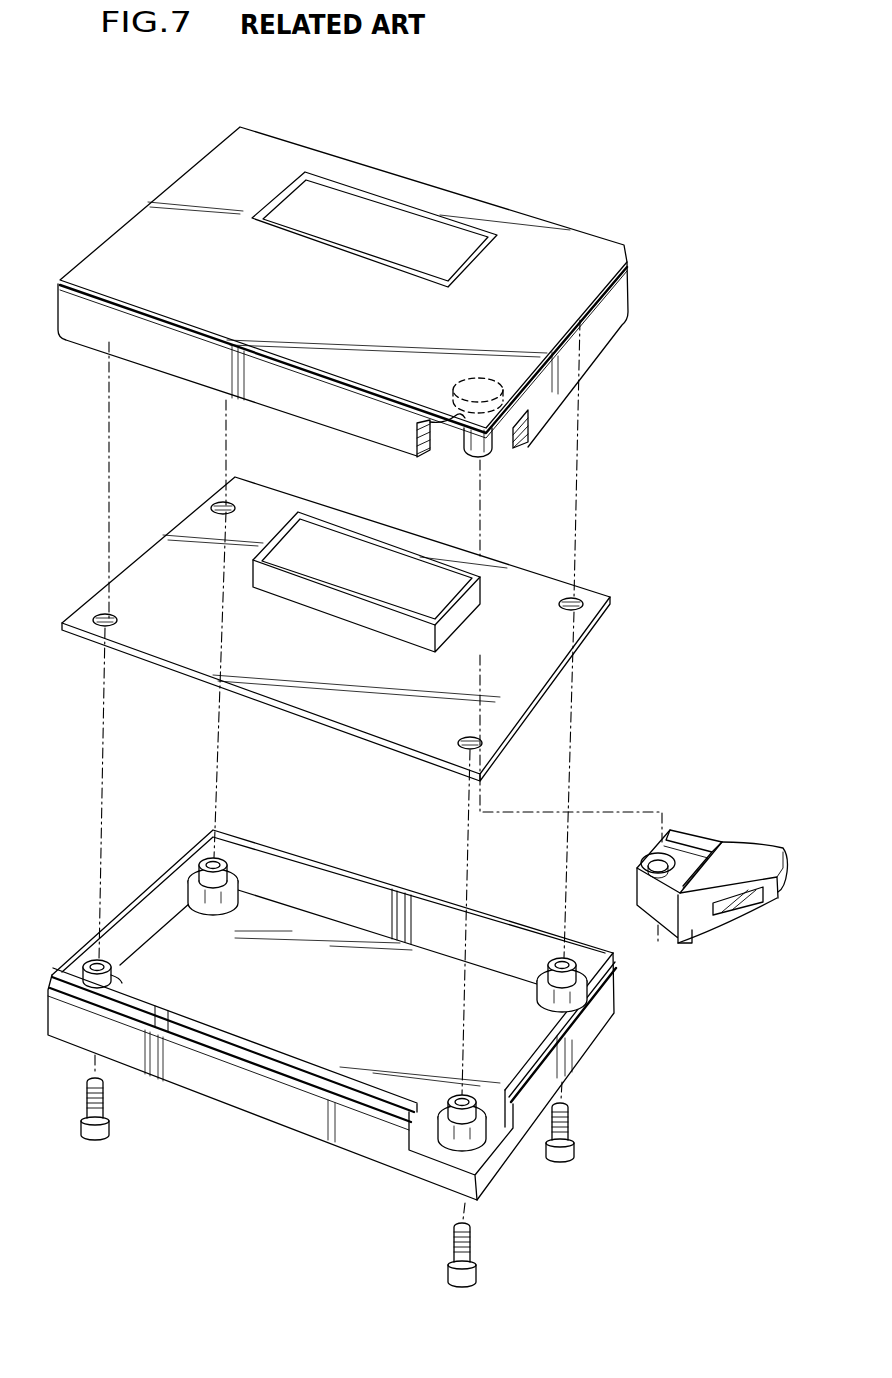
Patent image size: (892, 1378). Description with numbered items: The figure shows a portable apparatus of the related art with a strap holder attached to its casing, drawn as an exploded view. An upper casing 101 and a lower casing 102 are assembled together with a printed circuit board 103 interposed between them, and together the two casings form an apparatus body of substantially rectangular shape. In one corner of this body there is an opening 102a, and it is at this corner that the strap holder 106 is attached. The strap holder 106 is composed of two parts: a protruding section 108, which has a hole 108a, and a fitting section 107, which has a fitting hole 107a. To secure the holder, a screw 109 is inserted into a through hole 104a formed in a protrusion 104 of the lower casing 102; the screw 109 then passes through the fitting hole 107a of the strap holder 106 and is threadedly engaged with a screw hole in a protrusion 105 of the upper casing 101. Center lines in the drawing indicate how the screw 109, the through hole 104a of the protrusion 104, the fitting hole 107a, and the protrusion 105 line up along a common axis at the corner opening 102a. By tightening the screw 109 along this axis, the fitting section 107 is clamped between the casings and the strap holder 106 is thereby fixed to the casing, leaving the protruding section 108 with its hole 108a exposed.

The upper casing 101 is at (354, 312).
The lower casing 102 is at (332, 1021).
The opening 102a is at (510, 1140).
The printed circuit board 103 is at (385, 717).
The protrusion 104 is at (419, 1109).
The through hole 104a is at (460, 1097).
The protrusion 105 is at (487, 455).
The strap holder 106 is at (700, 861).
The fitting section 107 is at (648, 850).
The fitting hole 107a is at (653, 850).
The protruding section 108 is at (752, 888).
The hole 108a is at (755, 897).
The screw 109 is at (476, 1283).